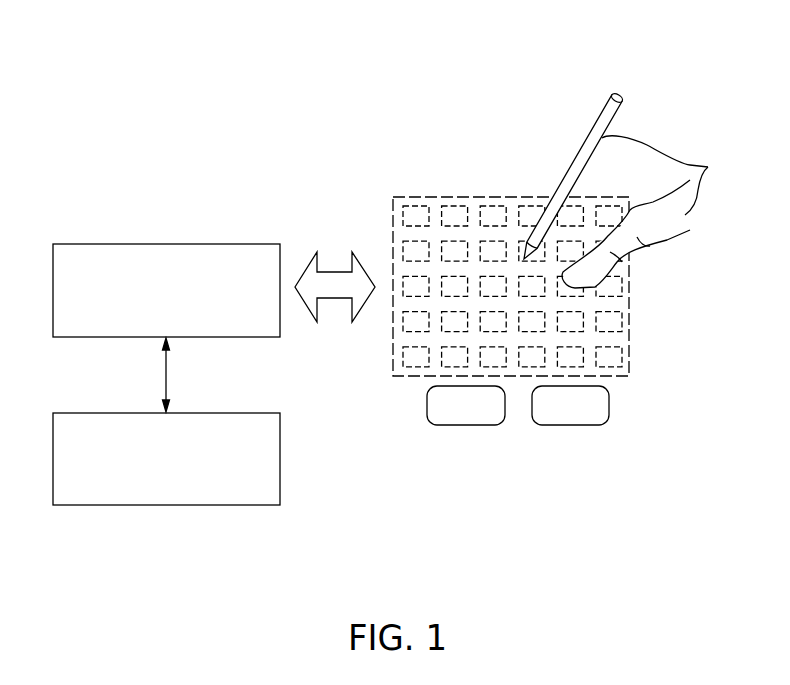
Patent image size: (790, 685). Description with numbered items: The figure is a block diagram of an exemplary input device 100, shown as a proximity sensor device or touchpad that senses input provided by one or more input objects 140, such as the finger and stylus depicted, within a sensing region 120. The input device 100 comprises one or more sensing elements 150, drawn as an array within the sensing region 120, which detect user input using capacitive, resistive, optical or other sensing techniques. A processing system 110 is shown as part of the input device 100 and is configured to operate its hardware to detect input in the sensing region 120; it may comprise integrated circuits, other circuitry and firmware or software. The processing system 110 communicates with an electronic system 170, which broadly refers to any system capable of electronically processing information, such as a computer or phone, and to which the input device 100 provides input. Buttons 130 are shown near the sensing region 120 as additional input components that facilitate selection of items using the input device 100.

The input device 100 is at (317, 93).
The processing system 110 is at (109, 244).
The sensing region 120 is at (630, 307).
The buttons 130 is at (457, 425).
The input objects 140 is at (707, 167).
The sensing elements 150 is at (412, 198).
The electronic system 170 is at (109, 413).